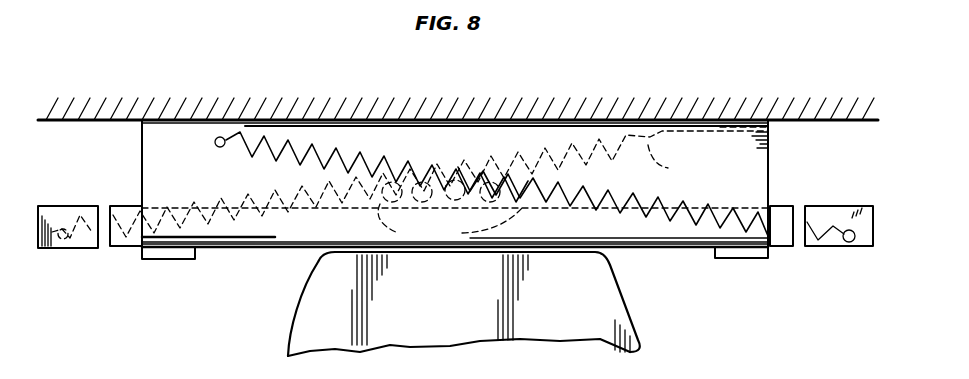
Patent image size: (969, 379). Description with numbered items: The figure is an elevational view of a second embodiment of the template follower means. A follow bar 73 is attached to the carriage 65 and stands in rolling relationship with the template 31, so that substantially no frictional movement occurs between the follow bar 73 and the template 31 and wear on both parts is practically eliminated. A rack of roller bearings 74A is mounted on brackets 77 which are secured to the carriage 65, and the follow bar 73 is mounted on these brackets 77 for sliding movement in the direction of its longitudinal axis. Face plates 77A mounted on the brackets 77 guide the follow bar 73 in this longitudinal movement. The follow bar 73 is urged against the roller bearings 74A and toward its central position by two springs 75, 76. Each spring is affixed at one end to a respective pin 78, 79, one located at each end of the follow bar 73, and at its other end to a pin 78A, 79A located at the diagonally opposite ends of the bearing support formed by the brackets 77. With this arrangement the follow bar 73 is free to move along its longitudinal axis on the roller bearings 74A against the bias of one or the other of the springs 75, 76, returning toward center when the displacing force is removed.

The carriage 65 is at (122, 118).
The brackets 77 is at (452, 152).
The pin 79A is at (217, 148).
The spring 75 is at (593, 186).
The spring 76 is at (667, 167).
The roller bearings 74A is at (450, 210).
The pin 78A is at (769, 133).
The pin 78 is at (62, 252).
The face plates 77A is at (165, 260).
The pin 79 is at (846, 243).
The follow bar 73 is at (650, 236).
The template 31 is at (608, 322).